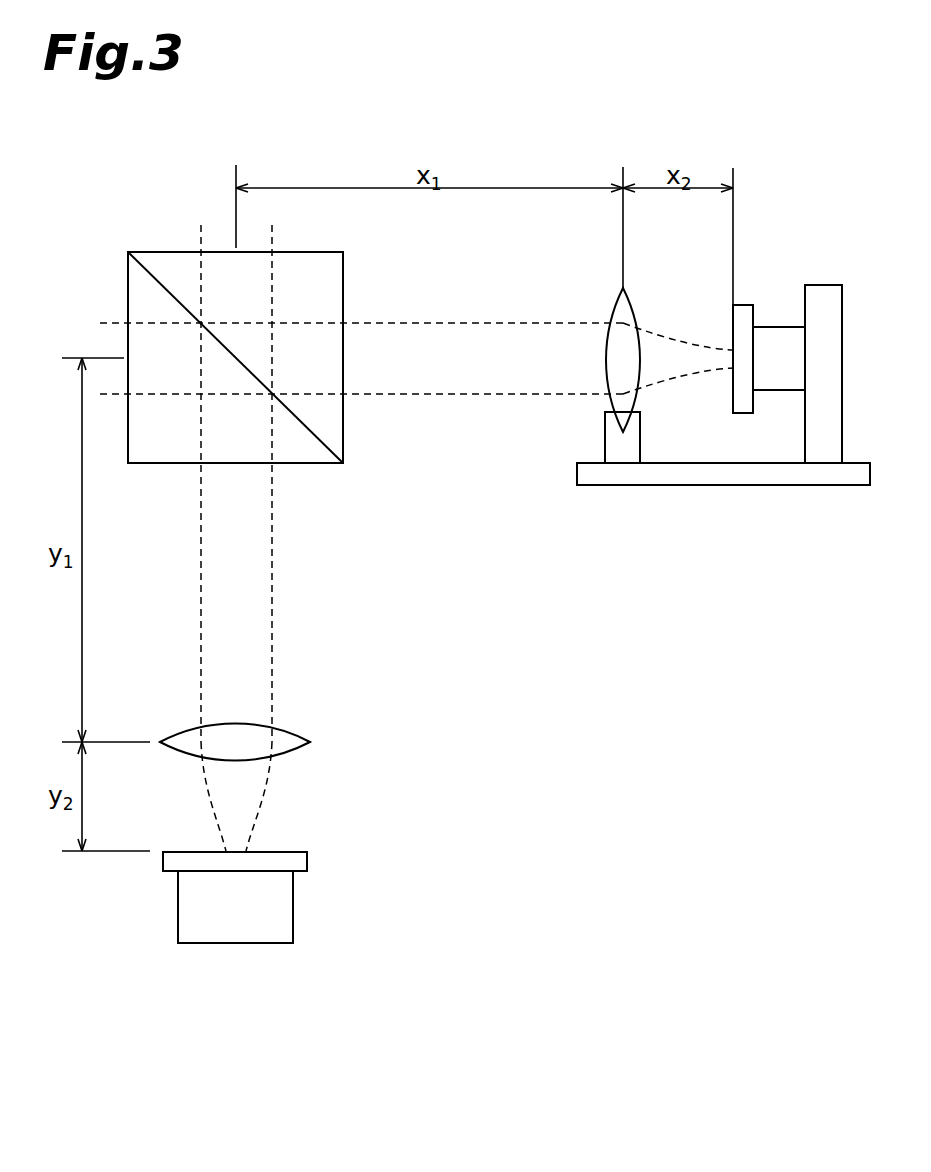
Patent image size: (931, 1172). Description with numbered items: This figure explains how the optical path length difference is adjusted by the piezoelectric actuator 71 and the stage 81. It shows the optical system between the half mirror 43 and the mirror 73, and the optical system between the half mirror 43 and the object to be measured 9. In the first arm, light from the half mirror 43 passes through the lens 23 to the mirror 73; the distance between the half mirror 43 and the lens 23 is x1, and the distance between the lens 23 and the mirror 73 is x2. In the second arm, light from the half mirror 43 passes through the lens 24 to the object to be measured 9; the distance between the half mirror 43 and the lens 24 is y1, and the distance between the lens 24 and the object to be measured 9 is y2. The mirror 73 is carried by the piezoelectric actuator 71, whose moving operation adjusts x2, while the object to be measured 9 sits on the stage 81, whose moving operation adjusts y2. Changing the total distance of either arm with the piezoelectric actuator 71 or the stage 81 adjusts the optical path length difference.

The half mirror 43 is at (313, 463).
The lens 23 is at (612, 310).
The mirror 73 is at (733, 325).
The piezoelectric actuator 71 is at (785, 327).
The lens 24 is at (285, 732).
The object to be measured 9 is at (278, 852).
The stage 81 is at (260, 943).